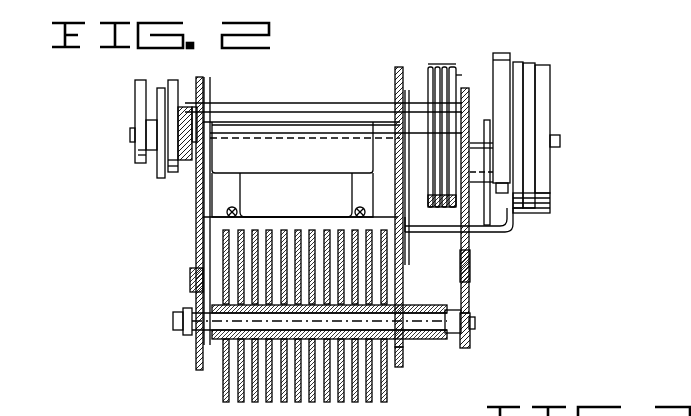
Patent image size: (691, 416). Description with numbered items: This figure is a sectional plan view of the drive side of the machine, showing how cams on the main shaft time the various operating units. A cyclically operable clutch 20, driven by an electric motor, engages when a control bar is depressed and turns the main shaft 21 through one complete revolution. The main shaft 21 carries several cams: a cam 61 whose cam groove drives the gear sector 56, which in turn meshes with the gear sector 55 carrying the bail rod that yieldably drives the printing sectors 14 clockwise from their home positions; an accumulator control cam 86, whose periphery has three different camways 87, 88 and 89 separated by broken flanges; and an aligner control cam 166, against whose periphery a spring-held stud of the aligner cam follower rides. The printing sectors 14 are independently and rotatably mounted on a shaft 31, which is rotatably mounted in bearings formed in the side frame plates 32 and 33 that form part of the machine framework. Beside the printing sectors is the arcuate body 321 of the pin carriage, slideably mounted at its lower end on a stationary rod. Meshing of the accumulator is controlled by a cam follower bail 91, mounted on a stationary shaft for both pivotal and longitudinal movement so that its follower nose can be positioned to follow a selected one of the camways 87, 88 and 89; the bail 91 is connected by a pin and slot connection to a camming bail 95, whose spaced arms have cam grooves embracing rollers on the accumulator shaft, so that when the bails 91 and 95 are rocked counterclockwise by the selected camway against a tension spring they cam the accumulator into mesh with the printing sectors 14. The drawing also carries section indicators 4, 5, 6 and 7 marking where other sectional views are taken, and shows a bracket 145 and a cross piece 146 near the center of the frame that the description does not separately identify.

The printing sectors 14 is at (282, 400).
The cyclically operable clutch 20 is at (550, 194).
The main shaft 21 is at (558, 138).
The shaft 31 is at (407, 315).
The side frame plate 32 is at (196, 360).
The side frame plate 33 is at (400, 355).
The gear sector 55 is at (469, 296).
The gear sector 56 is at (469, 258).
The cam 61 is at (500, 53).
The accumulator control cam 86 is at (461, 64).
The camway 87 is at (428, 74).
The camway 88 is at (443, 104).
The camway 89 is at (452, 86).
The cam follower bail 91 is at (512, 231).
The camming bail 95 is at (240, 106).
The bracket 145 is at (292, 172).
The cross bar 146 is at (355, 212).
The aligner control cam 166 is at (162, 178).
The arcuate body 321 is at (392, 413).
The section line 4 is at (463, 39).
The section line 5 is at (455, 59).
The section line 6 is at (475, 17).
The section line 7 is at (513, 8).